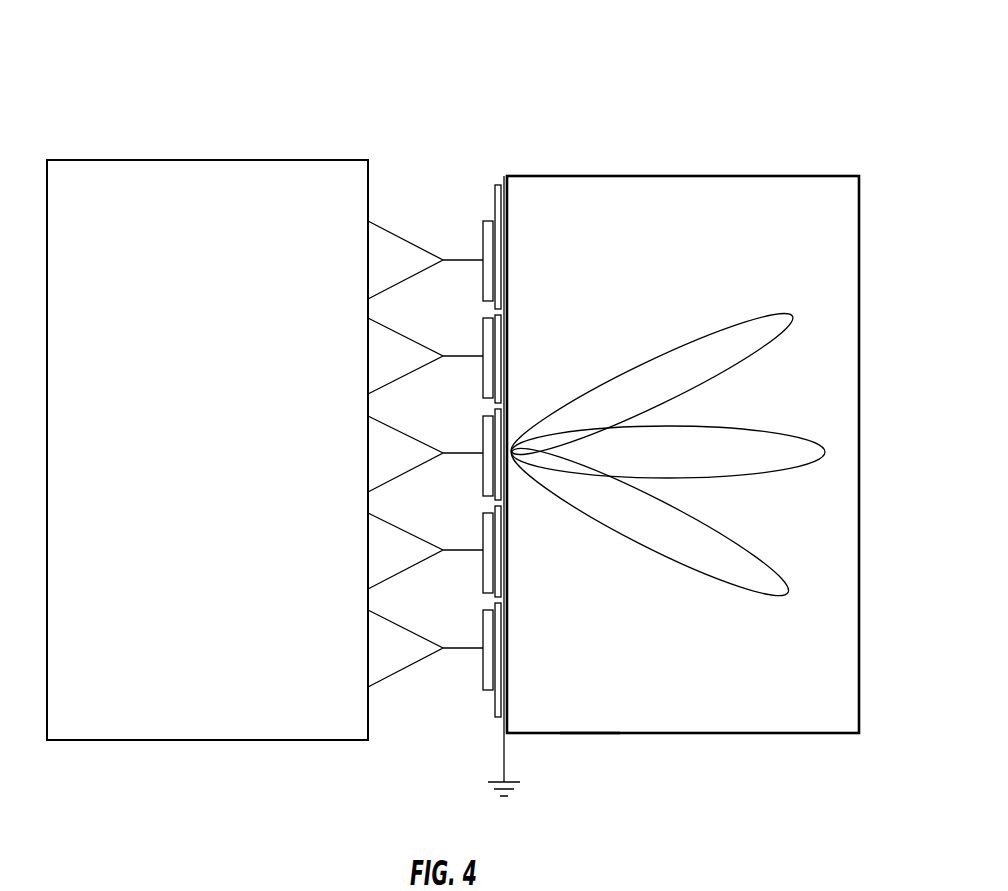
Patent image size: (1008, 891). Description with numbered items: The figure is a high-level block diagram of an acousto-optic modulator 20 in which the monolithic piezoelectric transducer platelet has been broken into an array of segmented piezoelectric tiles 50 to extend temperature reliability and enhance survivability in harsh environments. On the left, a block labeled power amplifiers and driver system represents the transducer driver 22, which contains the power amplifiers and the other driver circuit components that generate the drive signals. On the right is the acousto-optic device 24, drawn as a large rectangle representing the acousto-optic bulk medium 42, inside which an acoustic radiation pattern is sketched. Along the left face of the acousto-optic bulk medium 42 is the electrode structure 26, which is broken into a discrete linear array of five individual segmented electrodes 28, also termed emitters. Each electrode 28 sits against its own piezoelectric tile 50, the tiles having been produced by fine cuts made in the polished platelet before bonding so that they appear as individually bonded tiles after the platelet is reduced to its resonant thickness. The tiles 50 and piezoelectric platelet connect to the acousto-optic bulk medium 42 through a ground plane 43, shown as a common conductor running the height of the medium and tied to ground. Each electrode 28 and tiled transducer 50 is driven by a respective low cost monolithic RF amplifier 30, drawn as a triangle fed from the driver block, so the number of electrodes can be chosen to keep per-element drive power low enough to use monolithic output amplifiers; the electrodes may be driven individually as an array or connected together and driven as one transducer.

The acousto-optic modulator 20 is at (436, 112).
The transducer driver 22 is at (200, 155).
The acousto-optic device 24 is at (598, 161).
The electrode structure 26 is at (410, 725).
The electrode 28 is at (482, 282).
The monolithic RF amplifier 30 is at (390, 228).
The acousto-optic bulk medium 42 is at (592, 735).
The ground plane 43 is at (508, 176).
The segmented piezoelectric tile 50 is at (497, 188).